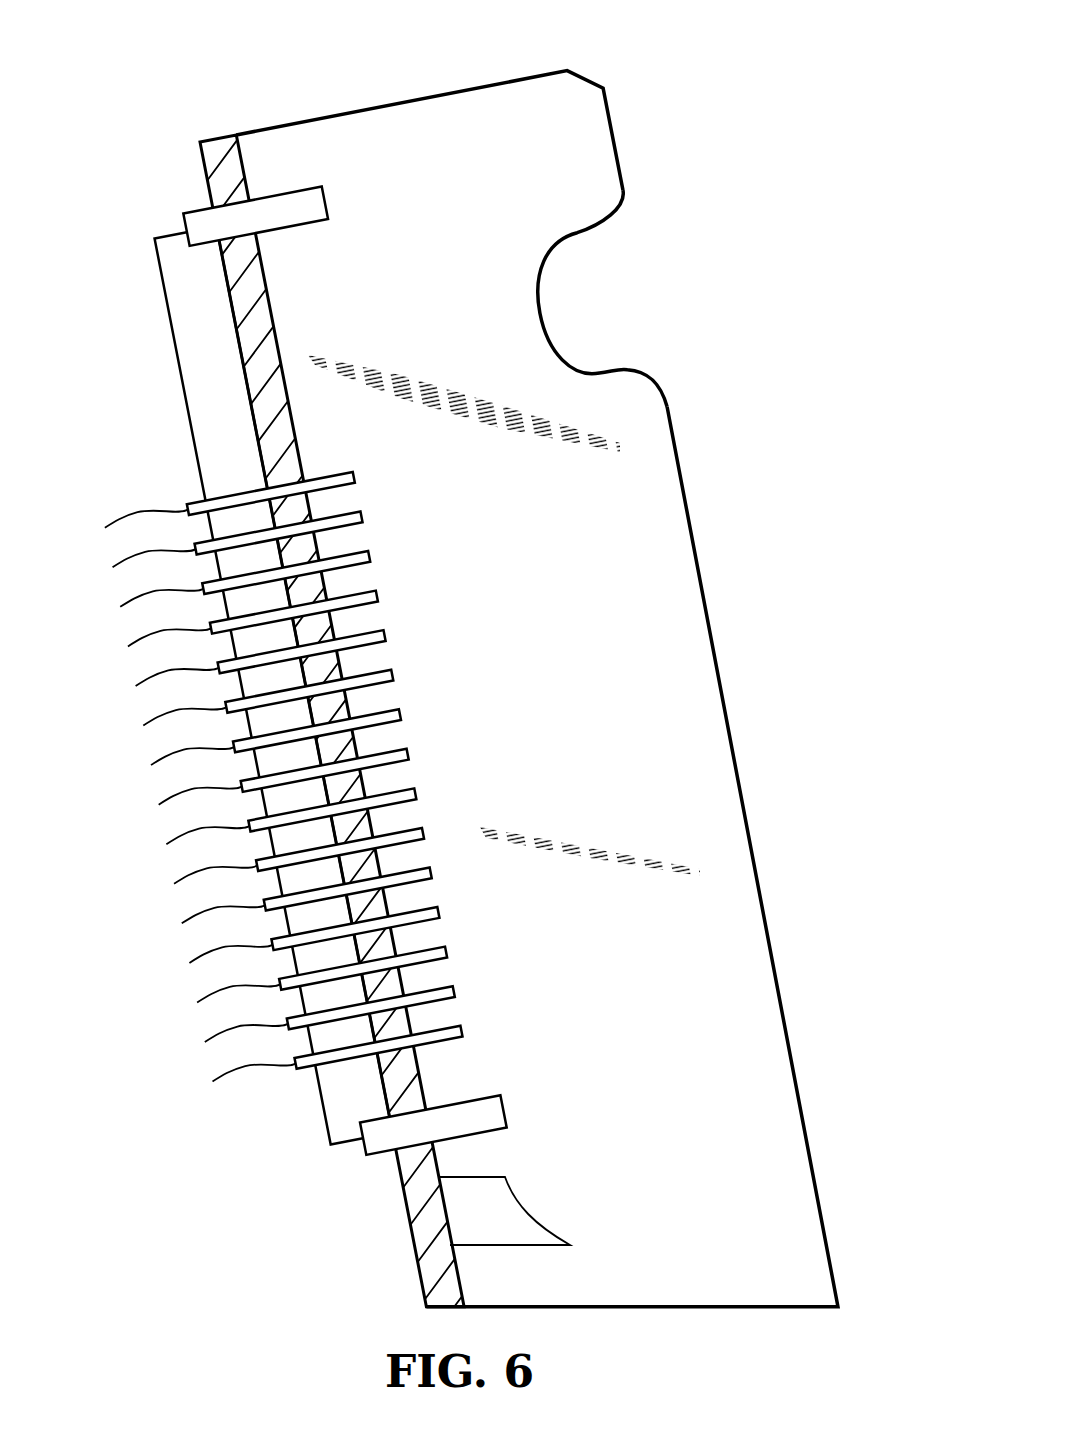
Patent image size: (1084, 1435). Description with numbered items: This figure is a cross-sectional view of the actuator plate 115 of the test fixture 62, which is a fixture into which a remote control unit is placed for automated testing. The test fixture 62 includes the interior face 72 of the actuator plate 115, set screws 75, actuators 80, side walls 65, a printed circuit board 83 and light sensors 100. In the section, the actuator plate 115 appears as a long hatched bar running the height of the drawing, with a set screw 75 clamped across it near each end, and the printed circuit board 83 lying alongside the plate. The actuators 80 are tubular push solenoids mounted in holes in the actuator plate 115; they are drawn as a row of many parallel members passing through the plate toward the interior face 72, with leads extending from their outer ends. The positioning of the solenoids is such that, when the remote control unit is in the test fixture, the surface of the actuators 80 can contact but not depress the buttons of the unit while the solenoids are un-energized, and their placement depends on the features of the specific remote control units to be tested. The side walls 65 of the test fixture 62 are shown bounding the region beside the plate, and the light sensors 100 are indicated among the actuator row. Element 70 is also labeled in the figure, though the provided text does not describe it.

The test fixture 62 is at (701, 89).
The side walls 65 is at (657, 380).
The mounting foot 70 is at (543, 1223).
The interior face 72 is at (423, 1082).
The set screws 75 is at (283, 203).
The actuators 80 is at (326, 746).
The printed circuit board 83 is at (343, 1107).
The light sensors 100 is at (372, 740).
The actuator plate 115 is at (217, 135).